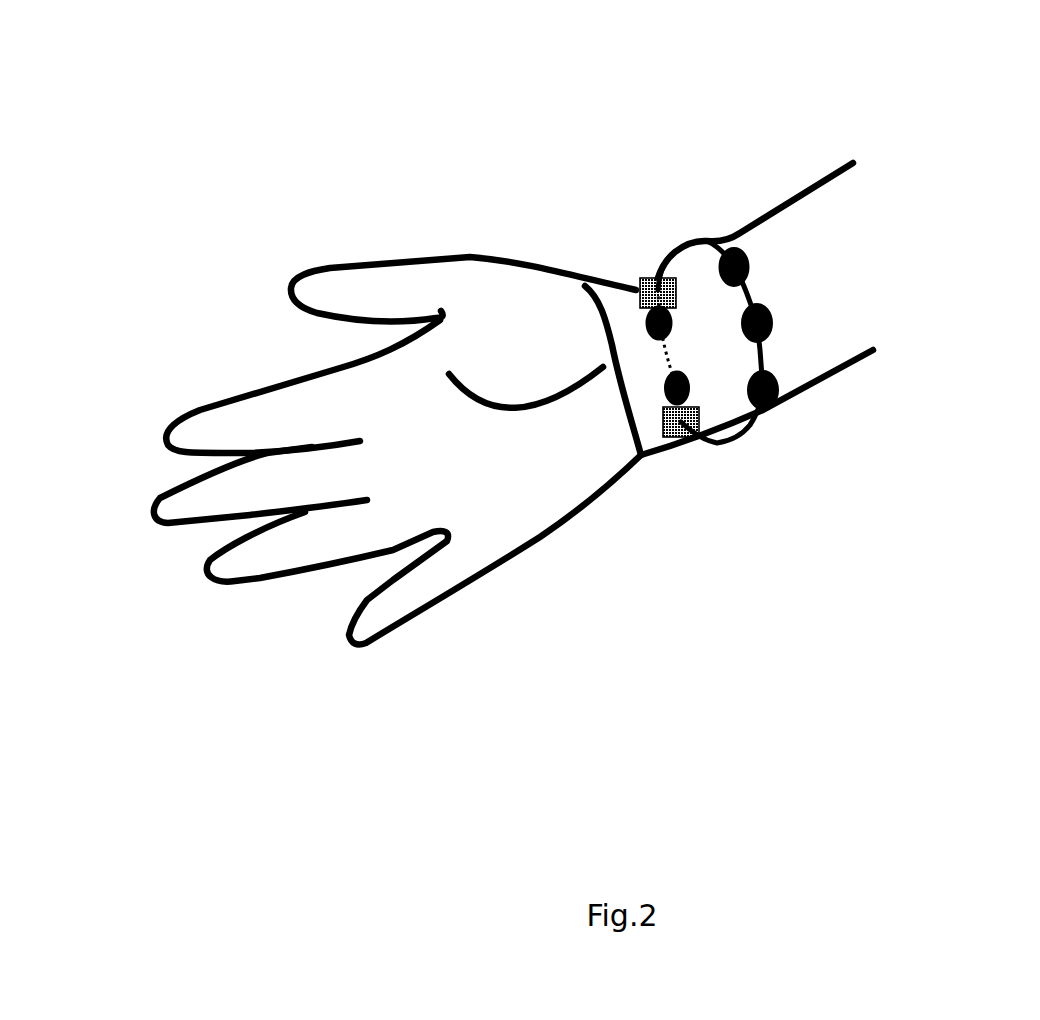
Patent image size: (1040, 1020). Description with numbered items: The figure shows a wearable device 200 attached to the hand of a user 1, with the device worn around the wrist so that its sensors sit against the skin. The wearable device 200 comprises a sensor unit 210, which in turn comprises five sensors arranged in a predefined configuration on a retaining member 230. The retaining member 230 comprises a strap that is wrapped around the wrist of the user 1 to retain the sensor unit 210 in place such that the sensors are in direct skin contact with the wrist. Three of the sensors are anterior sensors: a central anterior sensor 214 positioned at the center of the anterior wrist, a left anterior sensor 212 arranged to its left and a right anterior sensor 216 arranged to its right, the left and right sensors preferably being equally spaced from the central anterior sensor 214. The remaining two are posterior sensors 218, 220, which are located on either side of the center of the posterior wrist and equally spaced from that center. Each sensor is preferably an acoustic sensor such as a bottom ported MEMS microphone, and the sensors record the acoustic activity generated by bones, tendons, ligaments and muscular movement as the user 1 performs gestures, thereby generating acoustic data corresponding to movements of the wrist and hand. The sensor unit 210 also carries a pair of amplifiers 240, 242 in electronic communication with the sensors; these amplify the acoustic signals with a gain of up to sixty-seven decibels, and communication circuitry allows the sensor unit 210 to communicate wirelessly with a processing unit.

The user 1 is at (406, 490).
The wearable device 200 is at (609, 328).
The sensor unit 210 is at (609, 355).
The left anterior sensor 212 is at (773, 407).
The central anterior sensor 214 is at (774, 322).
The right anterior sensor 216 is at (740, 250).
The posterior sensor 218 is at (668, 398).
The posterior sensor 220 is at (647, 321).
The retaining member 230 is at (732, 444).
The amplifier 240 is at (683, 432).
The amplifier 242 is at (663, 287).